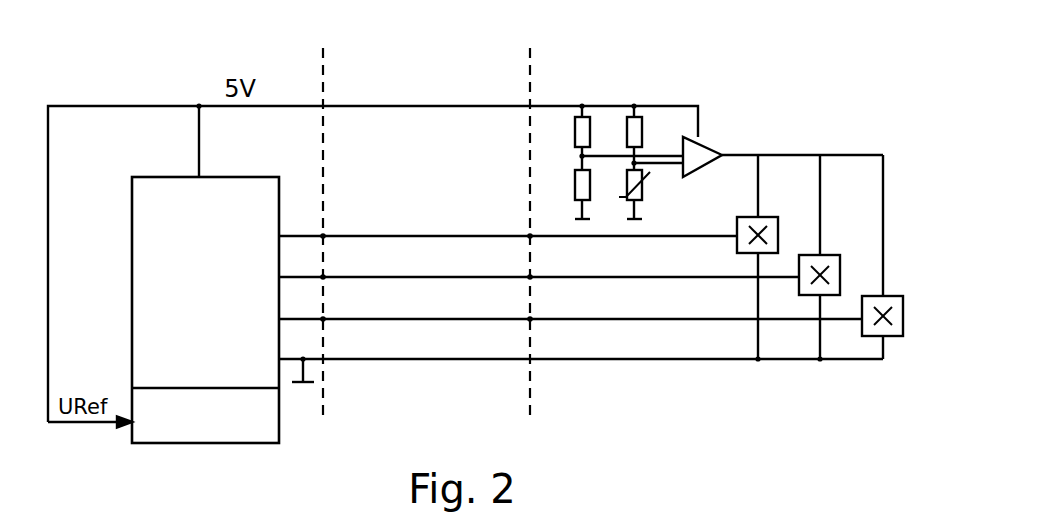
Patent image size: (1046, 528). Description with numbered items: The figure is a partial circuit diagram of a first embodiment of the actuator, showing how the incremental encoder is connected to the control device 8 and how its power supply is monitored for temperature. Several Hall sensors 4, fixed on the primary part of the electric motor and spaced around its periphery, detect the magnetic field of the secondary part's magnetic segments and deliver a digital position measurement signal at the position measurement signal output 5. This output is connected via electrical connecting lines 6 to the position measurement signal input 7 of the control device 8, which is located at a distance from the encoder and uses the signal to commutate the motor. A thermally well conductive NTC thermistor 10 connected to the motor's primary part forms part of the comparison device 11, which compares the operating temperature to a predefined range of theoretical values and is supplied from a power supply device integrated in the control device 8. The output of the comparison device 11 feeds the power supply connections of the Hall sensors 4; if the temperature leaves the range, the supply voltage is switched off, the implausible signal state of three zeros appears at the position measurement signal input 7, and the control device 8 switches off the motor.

The Hall sensors 4 is at (806, 262).
The position measurement signal output 5 is at (530, 319).
The electrical connecting lines 6 is at (437, 319).
The position measurement signal input 7 is at (323, 319).
The control device 8 is at (199, 289).
The NTC thermistor 10 is at (641, 192).
The comparison device 11 is at (723, 126).